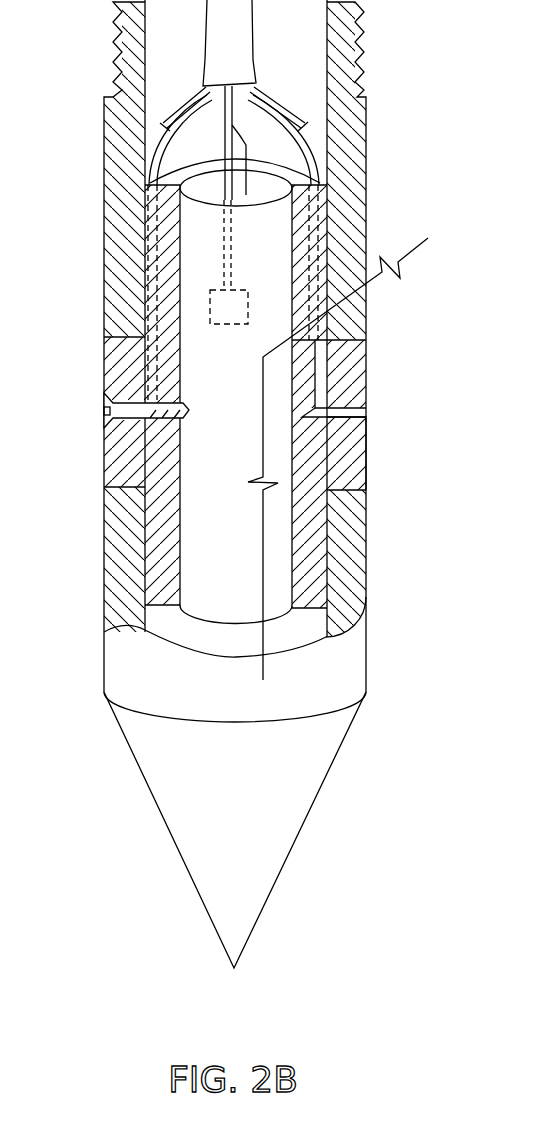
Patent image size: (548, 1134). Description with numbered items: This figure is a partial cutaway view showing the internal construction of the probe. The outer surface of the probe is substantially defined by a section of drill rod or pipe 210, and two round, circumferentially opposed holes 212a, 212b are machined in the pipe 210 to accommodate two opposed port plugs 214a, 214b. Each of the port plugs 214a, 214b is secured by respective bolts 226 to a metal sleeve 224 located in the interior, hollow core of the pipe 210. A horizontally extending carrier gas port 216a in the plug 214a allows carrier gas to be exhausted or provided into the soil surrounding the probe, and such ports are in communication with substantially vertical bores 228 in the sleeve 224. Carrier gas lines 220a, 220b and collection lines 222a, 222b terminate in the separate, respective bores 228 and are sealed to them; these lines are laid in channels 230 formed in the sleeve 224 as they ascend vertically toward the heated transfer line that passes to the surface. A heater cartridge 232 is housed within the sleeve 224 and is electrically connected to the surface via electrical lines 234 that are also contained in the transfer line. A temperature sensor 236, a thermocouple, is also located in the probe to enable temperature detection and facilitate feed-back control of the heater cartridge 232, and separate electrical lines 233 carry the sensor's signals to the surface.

The pipe 210 is at (367, 226).
The hole 212a is at (367, 343).
The hole 212b is at (108, 347).
The port plug 214a is at (367, 400).
The port plug 214b is at (104, 380).
The carrier gas port 216a is at (367, 418).
The carrier gas line 220a is at (314, 235).
The carrier gas line 220b is at (188, 107).
The collection line 222a is at (270, 100).
The collection line 222b is at (150, 162).
The metal sleeve 224 is at (150, 258).
The bolt 226 is at (104, 408).
The bore 228 is at (335, 372).
The channel 230 is at (327, 183).
The heater cartridge 232 is at (192, 190).
The electrical lines 233 is at (318, 150).
The electrical lines 234 is at (307, 120).
The temperature sensor 236 is at (210, 290).